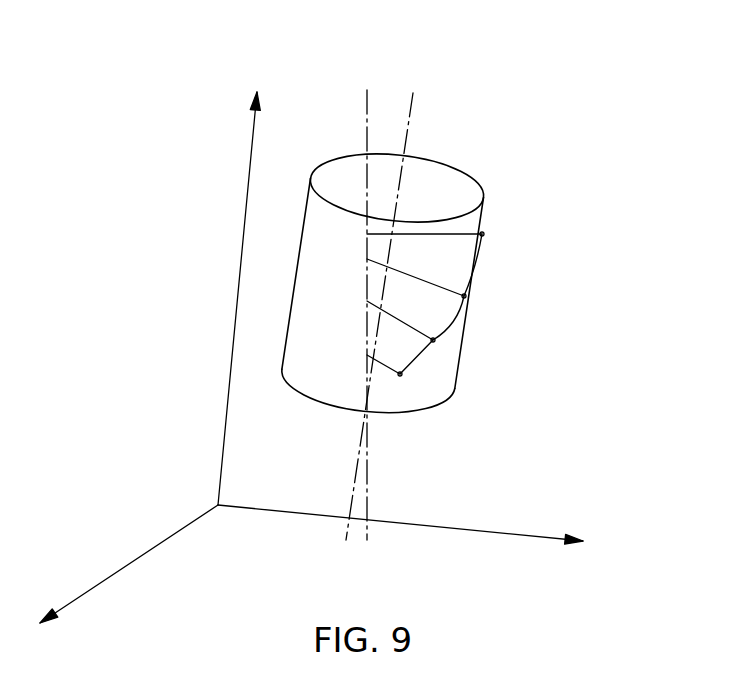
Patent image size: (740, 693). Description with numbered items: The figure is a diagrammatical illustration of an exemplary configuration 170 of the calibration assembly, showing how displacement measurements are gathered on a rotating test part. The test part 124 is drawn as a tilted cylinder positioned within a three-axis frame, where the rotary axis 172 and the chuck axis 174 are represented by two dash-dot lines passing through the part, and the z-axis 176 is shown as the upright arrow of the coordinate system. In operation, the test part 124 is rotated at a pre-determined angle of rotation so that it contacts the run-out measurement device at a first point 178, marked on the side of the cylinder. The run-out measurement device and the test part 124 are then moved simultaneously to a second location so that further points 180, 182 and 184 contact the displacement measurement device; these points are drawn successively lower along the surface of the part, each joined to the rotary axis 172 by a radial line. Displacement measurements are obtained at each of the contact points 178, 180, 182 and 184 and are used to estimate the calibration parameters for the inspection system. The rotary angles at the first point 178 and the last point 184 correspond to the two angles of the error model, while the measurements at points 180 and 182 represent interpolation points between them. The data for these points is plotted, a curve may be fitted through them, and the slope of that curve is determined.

The exemplary configuration 170 is at (562, 70).
The rotary axis 172 is at (366, 108).
The chuck axis 174 is at (412, 108).
The z-axis 176 is at (245, 192).
The test part 124 is at (305, 390).
The first point 178 is at (483, 237).
The second contact point 180 is at (462, 323).
The third contact point 182 is at (434, 348).
The fourth contact point 184 is at (400, 376).